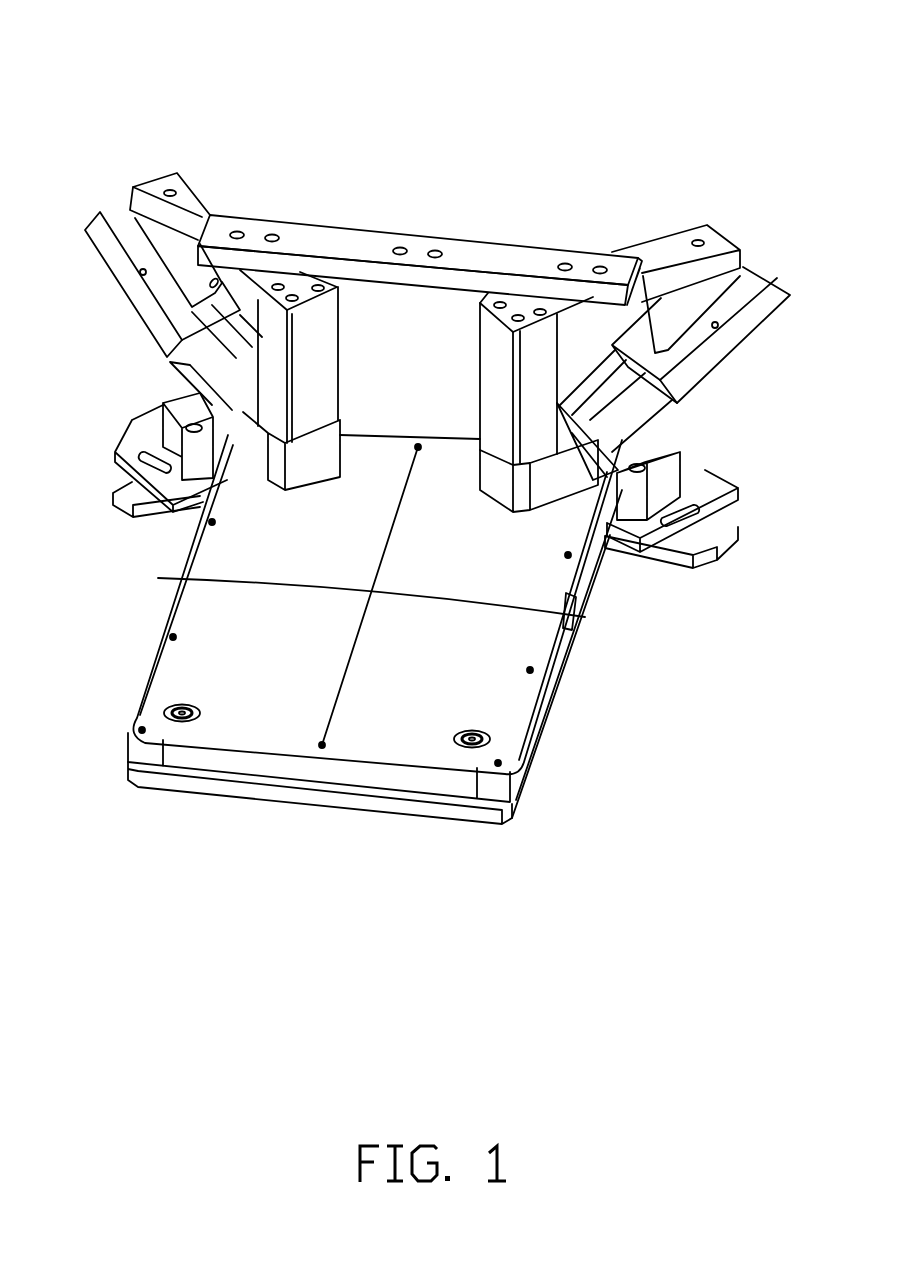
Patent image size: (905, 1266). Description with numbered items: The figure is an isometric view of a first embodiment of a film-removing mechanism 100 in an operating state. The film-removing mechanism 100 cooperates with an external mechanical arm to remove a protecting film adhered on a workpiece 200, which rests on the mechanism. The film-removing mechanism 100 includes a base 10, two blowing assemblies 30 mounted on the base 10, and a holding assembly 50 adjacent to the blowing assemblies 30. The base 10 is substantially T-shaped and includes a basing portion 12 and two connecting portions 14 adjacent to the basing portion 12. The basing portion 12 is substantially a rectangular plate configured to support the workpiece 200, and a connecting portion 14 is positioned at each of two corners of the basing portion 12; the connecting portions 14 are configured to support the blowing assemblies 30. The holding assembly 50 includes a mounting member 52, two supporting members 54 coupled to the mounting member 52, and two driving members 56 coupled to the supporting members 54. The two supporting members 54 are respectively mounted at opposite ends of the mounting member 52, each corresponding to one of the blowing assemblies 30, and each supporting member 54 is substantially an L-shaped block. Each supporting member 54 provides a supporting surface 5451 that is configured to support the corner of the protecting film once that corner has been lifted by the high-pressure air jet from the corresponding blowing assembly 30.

The film-removing mechanism 100 is at (481, 46).
The base 10 is at (426, 629).
The basing portion 12 is at (602, 653).
The connecting portion 14 is at (617, 556).
The blowing assembly 30 is at (673, 482).
The holding assembly 50 is at (738, 360).
The mounting member 52 is at (344, 242).
The supporting member 54 is at (160, 224).
The driving member 56 is at (167, 300).
The supporting surface 5451 is at (625, 445).
The workpiece 200 is at (395, 745).